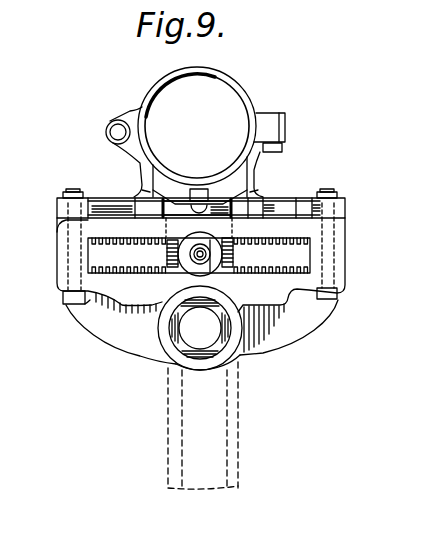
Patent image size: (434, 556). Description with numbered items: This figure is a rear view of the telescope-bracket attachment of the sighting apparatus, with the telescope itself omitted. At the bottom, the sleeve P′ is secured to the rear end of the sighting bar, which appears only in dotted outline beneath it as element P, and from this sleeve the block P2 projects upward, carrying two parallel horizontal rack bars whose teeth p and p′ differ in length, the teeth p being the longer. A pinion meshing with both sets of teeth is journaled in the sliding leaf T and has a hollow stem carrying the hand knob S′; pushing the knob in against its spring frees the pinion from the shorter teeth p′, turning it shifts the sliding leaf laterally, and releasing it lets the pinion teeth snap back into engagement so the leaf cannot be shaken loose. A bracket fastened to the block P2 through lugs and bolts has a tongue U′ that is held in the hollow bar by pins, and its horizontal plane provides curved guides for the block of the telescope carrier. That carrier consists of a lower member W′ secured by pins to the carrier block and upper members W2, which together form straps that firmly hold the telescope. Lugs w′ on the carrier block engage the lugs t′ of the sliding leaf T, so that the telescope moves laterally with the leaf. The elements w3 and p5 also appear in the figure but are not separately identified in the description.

The upper members of telescope carrier W2 is at (247, 90).
The lower member of telescope carrier W′ is at (256, 186).
The lugs of sliding leaf t′ is at (173, 202).
The sliding leaf T is at (157, 198).
The lugs of carrier block w′ is at (249, 207).
The clamping bolts w3 is at (71, 192).
The block P2 is at (287, 220).
The teeth of second rack bar p′ is at (120, 240).
The hand knob S′ is at (212, 263).
The tongue of bracket U′ is at (193, 346).
The sleeve P′ is at (224, 362).
The bolt hole p5 is at (66, 240).
The teeth of first rack bar p is at (136, 276).
The post P is at (239, 462).